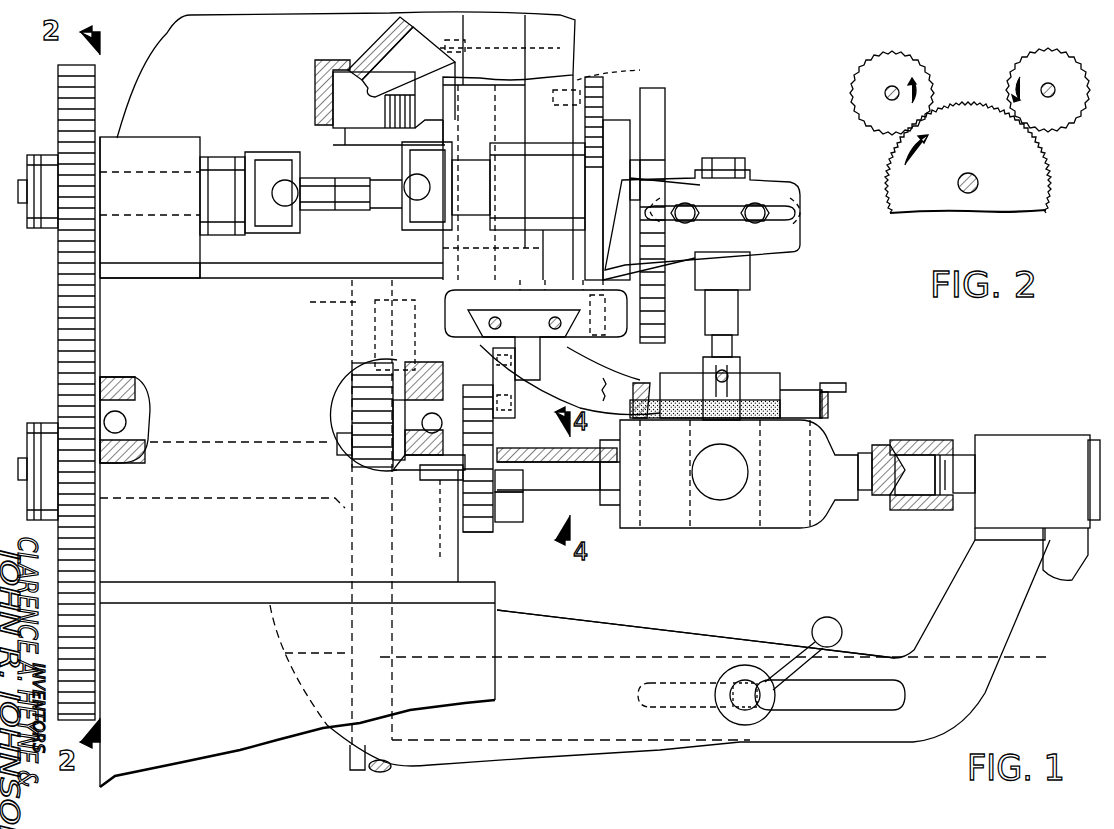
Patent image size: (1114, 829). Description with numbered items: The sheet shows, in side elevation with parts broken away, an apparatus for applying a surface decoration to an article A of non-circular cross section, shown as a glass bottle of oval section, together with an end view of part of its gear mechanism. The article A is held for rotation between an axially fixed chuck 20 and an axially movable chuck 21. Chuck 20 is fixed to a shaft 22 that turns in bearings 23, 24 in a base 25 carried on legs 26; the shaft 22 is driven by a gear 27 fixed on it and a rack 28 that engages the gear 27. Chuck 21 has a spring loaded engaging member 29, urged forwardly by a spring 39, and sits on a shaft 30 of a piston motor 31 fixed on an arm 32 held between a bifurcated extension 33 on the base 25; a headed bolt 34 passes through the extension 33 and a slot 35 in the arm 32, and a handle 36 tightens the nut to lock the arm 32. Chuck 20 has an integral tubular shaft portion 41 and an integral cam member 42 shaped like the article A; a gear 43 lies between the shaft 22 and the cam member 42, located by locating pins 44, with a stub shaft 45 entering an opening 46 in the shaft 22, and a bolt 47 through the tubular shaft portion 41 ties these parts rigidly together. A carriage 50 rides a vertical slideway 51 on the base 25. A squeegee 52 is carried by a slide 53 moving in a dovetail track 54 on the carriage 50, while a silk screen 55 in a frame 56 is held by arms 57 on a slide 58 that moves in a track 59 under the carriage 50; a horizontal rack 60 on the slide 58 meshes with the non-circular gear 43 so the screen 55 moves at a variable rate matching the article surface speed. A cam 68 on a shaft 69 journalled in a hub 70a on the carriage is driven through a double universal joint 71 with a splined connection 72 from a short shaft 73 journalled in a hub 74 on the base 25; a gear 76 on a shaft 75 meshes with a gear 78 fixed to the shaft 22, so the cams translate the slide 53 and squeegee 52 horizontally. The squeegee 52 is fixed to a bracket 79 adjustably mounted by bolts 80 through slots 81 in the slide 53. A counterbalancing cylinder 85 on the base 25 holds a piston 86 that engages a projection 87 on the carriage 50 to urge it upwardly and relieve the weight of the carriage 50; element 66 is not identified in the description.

In FIG. 1, the axially fixed chuck 20 is at (625, 528).
In FIG. 1, the axially movable chuck 21 is at (900, 440).
In FIG. 1, the shaft 22 is at (228, 448).
In FIG. 1, the bearing 23 is at (130, 412).
In FIG. 1, the bearing 24 is at (420, 398).
In FIG. 1, the base 25 is at (232, 562).
In FIG. 1, the legs 26 is at (168, 664).
In FIG. 1, the gear 27 is at (348, 432).
In FIG. 1, the rack 28 is at (365, 380).
In FIG. 1, the spring loaded engaging member 29 is at (893, 446).
In FIG. 1, the shaft 30 is at (960, 457).
In FIG. 1, the piston motor 31 is at (1030, 440).
In FIG. 1, the arm 32 is at (955, 618).
In FIG. 1, the bifurcated extension 33 is at (625, 638).
In FIG. 1, the headed bolt 34 is at (748, 682).
In FIG. 1, the slot 35 is at (832, 680).
In FIG. 1, the handle 36 is at (798, 642).
In FIG. 1, the spring 39 is at (930, 440).
In FIG. 1, the tubular shaft portion 41 is at (600, 495).
In FIG. 1, the cam member 42 is at (510, 502).
In FIG. 1, the gear 43 is at (478, 533).
In FIG. 1, the locating pins 44 is at (505, 522).
In FIG. 1, the stub shaft 45 is at (435, 482).
In FIG. 1, the opening 46 is at (445, 492).
In FIG. 1, the bolt 47 is at (545, 448).
In FIG. 1, the carriage 50 is at (580, 58).
In FIG. 1, the vertical slideway 51 is at (640, 70).
In FIG. 1, the squeegee 52 is at (768, 378).
In FIG. 1, the slide 53 is at (770, 180).
In FIG. 1, the dovetail track 54 is at (635, 168).
In FIG. 1, the silk screen 55 is at (818, 420).
In FIG. 1, the frame 56 is at (828, 388).
In FIG. 1, the arms 57 is at (593, 375).
In FIG. 1, the slide 58 is at (560, 338).
In FIG. 1, the track 59 is at (470, 308).
In FIG. 1, the horizontal rack 60 is at (480, 385).
In FIG. 1, the spacer 66 is at (660, 175).
In FIG. 1, the cam 68 is at (660, 108).
In FIG. 1, the shaft 69 is at (470, 160).
In FIG. 1, the hub 70a is at (548, 160).
In FIG. 1, the double universal joint 71 is at (340, 210).
In FIG. 1, the splined connection 72 is at (370, 178).
In FIG. 1, the short shaft 73 is at (216, 172).
In FIG. 1, the hub 74 is at (170, 143).
In FIG. 2, the shaft 75 is at (892, 93).
In FIG. 2, the gear 76 is at (928, 76).
In FIG. 1, the gear 78 is at (62, 382).
In FIG. 2, the gear 78 is at (1055, 178).
In FIG. 1, the bracket 79 is at (750, 275).
In FIG. 1, the bolts 80 is at (765, 212).
In FIG. 1, the slots 81 is at (795, 214).
In FIG. 1, the counterbalancing cylinder 85 is at (345, 112).
In FIG. 1, the piston 86 is at (340, 100).
In FIG. 1, the projection 87 is at (403, 62).
In FIG. 1, the article A is at (785, 524).